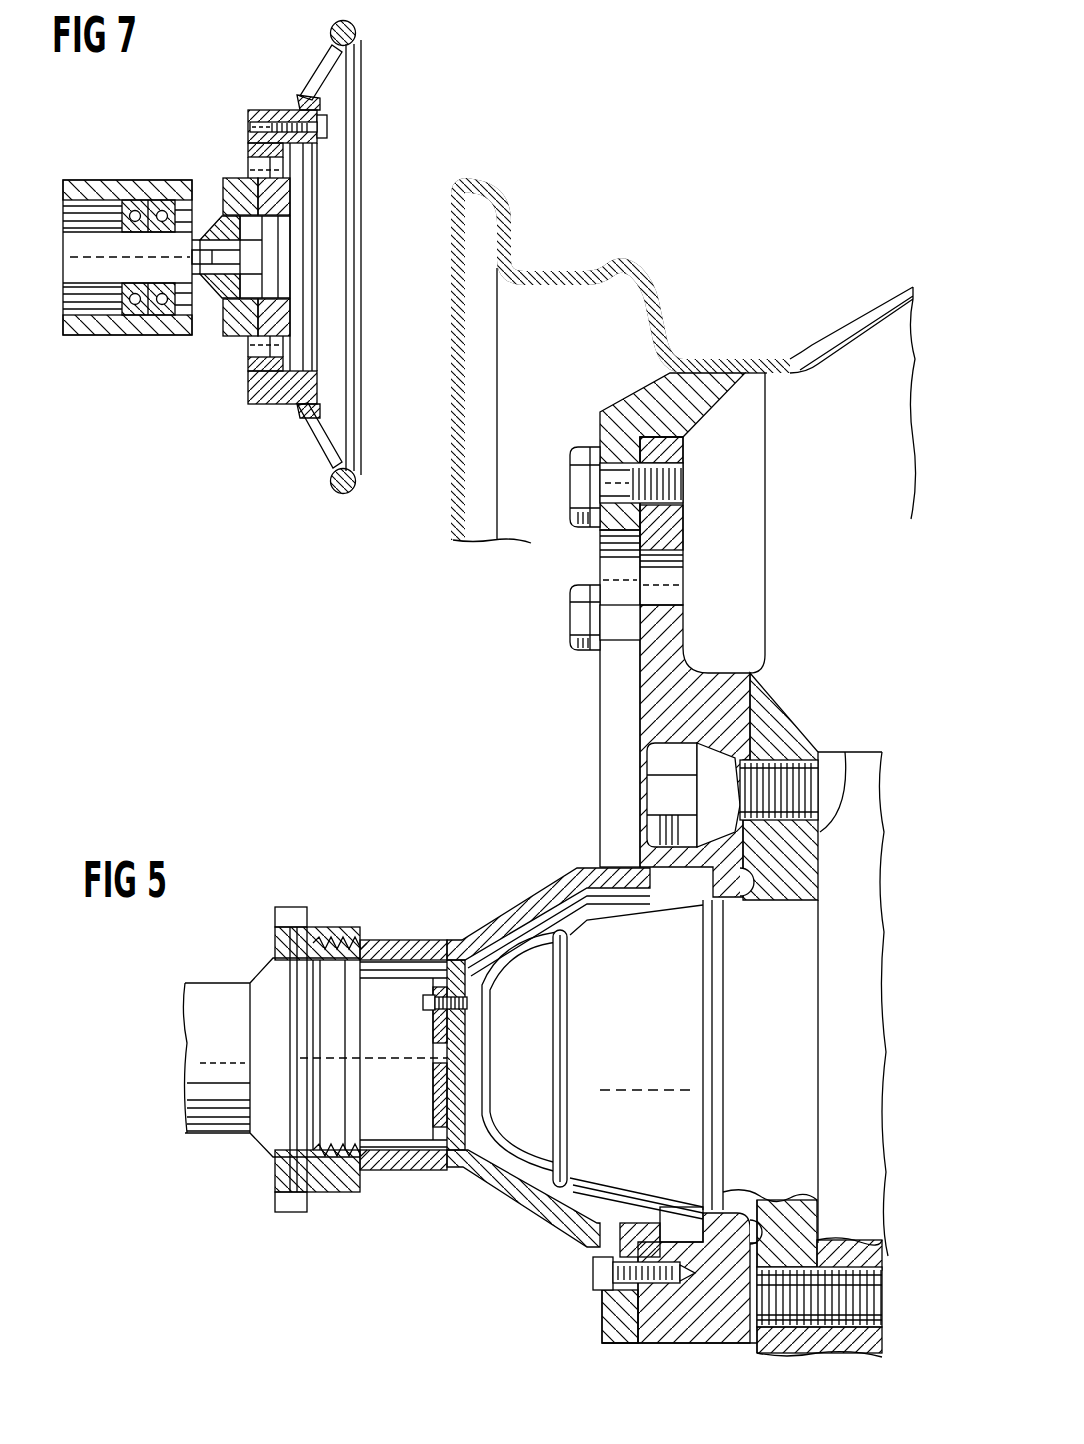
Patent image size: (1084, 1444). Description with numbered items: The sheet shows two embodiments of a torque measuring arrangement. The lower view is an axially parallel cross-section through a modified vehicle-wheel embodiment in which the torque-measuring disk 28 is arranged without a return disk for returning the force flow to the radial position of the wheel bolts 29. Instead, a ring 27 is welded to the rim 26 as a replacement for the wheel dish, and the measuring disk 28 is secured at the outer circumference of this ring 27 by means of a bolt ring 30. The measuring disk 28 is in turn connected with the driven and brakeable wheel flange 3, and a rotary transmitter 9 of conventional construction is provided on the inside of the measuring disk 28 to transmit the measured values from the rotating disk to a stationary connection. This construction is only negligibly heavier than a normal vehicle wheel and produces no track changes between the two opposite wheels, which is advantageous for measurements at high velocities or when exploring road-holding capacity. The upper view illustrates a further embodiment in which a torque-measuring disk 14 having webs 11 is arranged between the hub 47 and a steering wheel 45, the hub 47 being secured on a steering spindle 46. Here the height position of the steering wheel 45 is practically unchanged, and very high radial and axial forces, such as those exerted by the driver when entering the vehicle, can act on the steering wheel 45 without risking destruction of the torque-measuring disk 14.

In FIG. 5, the wheel flange 3 is at (780, 724).
In FIG. 5, the rotary transmitter 9 is at (222, 993).
In FIG. 7, the webs 11 is at (268, 150).
In FIG. 7, the torque-measuring disk 14 is at (283, 122).
In FIG. 5, the rim 26 is at (511, 227).
In FIG. 5, the ring 27 is at (639, 400).
In FIG. 5, the torque-measuring disk 28 is at (653, 677).
In FIG. 5, the wheel bolts 29 is at (667, 793).
In FIG. 5, the bolt ring 30 is at (573, 489).
In FIG. 7, the steering wheel 45 is at (350, 113).
In FIG. 7, the steering spindle 46 is at (63, 246).
In FIG. 7, the hub 47 is at (223, 191).